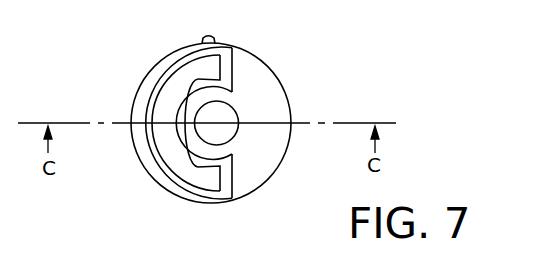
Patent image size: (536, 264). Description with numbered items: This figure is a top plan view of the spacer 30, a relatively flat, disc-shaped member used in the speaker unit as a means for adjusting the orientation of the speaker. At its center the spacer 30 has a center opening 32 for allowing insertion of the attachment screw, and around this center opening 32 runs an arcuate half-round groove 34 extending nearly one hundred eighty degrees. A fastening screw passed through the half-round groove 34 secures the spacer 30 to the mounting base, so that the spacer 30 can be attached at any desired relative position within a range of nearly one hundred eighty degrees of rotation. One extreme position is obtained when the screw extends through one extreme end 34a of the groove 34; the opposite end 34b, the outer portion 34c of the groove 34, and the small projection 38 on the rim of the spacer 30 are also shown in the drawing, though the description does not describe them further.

The spacer 30 is at (277, 102).
The center opening 32 is at (228, 132).
The half-round groove 34 is at (151, 122).
The extreme end of the half-round groove 34a is at (201, 74).
The second end of spring 34b is at (215, 180).
The outer portion of spring 34c is at (180, 162).
The projection 38 is at (215, 40).